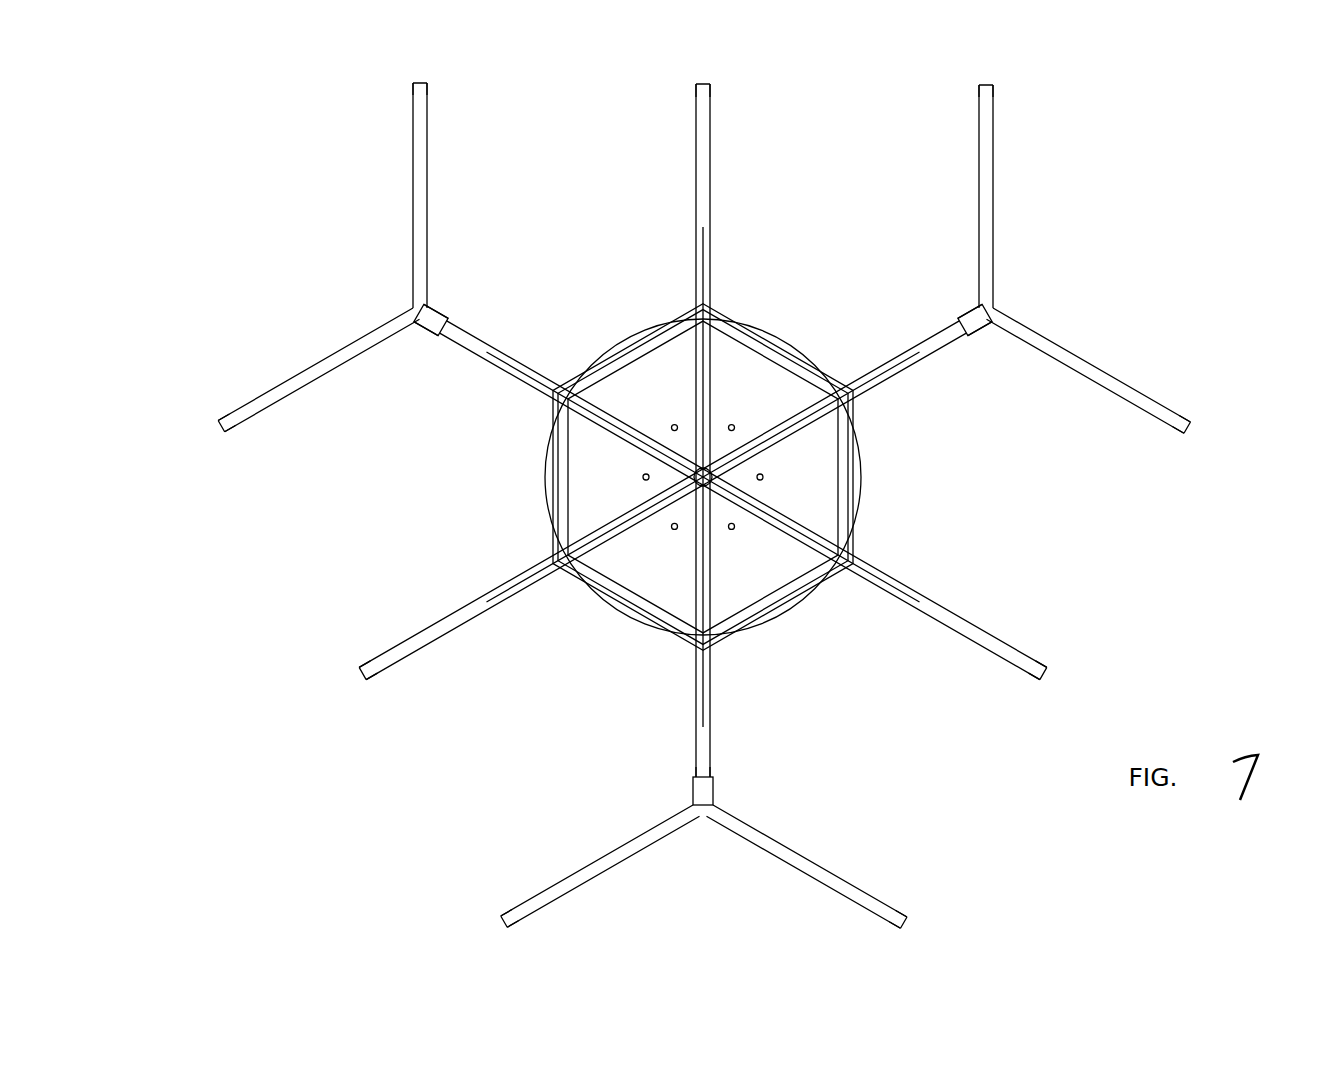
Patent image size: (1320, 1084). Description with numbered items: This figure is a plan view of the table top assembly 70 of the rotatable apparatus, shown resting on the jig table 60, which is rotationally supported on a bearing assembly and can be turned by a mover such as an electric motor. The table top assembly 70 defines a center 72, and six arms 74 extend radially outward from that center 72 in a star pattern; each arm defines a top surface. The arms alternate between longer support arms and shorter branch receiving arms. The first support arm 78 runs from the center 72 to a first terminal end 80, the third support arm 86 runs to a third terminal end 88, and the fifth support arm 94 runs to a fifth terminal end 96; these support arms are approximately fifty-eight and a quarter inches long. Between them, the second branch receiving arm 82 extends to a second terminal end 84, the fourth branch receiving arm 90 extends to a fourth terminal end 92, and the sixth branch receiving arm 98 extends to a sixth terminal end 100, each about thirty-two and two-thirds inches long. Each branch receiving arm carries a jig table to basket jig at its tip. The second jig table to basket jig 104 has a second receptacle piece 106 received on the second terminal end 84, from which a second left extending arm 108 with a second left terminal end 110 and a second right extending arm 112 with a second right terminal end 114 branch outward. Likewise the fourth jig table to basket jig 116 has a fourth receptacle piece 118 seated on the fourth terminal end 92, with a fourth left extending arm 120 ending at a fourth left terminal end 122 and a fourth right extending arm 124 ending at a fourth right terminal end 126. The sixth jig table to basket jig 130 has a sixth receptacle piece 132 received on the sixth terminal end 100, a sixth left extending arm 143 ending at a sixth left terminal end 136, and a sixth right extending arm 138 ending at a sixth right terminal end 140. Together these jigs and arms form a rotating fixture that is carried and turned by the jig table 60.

The table top assembly 70 is at (190, 120).
The jig table 60 is at (632, 336).
The center 72 is at (716, 478).
The arms 74 is at (520, 226).
The first support arm 78 is at (710, 162).
The first terminal end 80 is at (698, 84).
The second branch receiving arm 82 is at (902, 352).
The second terminal end 84 is at (966, 310).
The third support arm 86 is at (956, 612).
The third terminal end 88 is at (1050, 676).
The fourth branch receiving arm 90 is at (698, 688).
The fourth terminal end 92 is at (693, 790).
The fifth support arm 94 is at (452, 610).
The fifth terminal end 96 is at (360, 672).
The sixth branch receiving arm 98 is at (508, 352).
The sixth terminal end 100 is at (442, 310).
The second jig table to basket jig 104 is at (1103, 243).
The second receptacle piece 106 is at (985, 333).
The second left extending arm 108 is at (993, 162).
The second left terminal end 110 is at (990, 85).
The second right extending arm 112 is at (1090, 362).
The second right terminal end 114 is at (1192, 430).
The fourth jig table to basket jig 116 is at (712, 845).
The fourth receptacle piece 118 is at (713, 790).
The fourth left extending arm 120 is at (820, 850).
The fourth left terminal end 122 is at (905, 916).
The fourth right extending arm 124 is at (600, 856).
The fourth right terminal end 126 is at (500, 916).
The sixth jig table to basket jig 130 is at (308, 243).
The sixth receptacle piece 132 is at (430, 333).
The sixth left terminal end 136 is at (218, 428).
The sixth right extending arm 138 is at (413, 196).
The sixth right terminal end 140 is at (418, 84).
The sixth left extending arm 143 is at (322, 362).